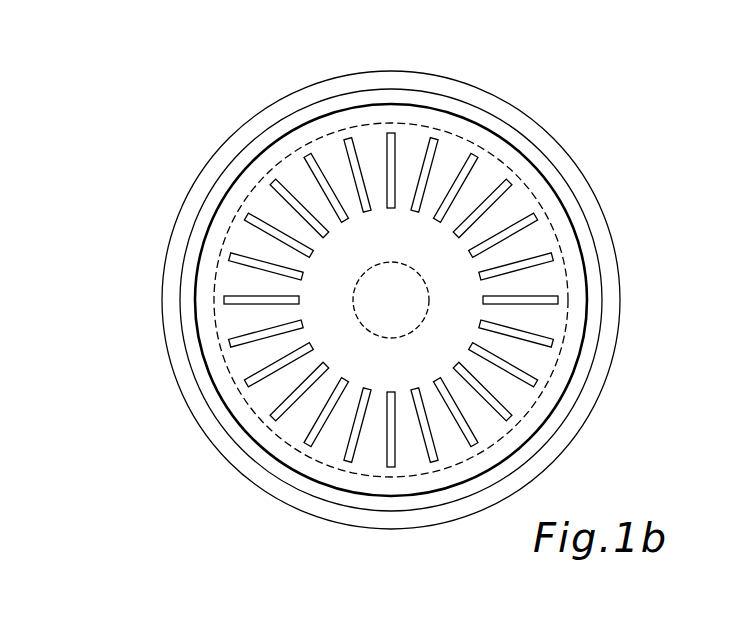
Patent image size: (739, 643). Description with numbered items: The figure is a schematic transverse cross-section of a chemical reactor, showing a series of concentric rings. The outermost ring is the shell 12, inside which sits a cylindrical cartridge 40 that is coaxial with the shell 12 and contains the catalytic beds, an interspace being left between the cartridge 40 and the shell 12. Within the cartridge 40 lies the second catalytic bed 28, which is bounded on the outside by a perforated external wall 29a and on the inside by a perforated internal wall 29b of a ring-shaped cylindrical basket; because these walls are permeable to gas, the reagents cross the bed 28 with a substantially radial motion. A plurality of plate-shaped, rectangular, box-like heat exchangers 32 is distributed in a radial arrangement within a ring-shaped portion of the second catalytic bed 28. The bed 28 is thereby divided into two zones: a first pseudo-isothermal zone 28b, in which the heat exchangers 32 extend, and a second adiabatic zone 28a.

The shell 12 is at (476, 104).
The cartridge 40 is at (405, 103).
The second catalytic bed 28 is at (520, 198).
The second adiabatic zone 28a is at (450, 308).
The first pseudo-isothermal zone 28b is at (503, 252).
The external wall 29a is at (222, 363).
The internal wall 29b is at (364, 327).
The heat exchangers 32 is at (280, 232).